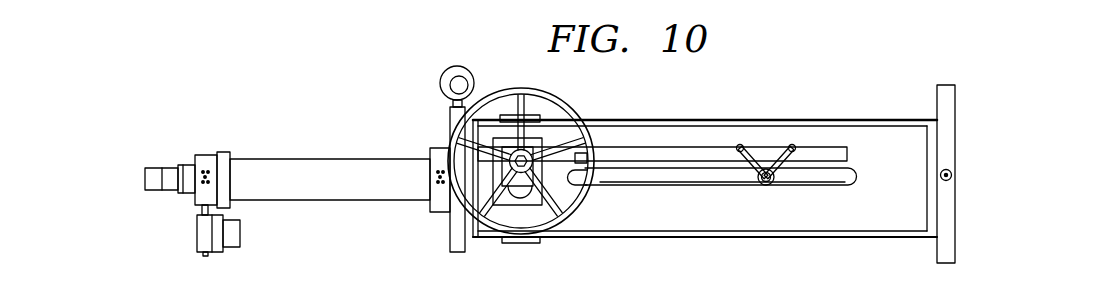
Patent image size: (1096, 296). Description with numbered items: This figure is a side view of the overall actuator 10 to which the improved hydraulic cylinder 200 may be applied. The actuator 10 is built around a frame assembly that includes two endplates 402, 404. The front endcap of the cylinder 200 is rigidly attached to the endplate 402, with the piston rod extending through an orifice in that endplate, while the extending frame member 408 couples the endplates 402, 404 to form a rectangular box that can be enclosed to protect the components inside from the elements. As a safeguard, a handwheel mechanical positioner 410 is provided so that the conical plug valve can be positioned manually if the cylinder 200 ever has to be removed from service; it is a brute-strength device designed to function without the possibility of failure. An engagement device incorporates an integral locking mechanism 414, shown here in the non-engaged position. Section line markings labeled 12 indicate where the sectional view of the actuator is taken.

The actuator 10 is at (833, 83).
The section line 12- 12 is at (712, 75).
The cylinder 200 is at (323, 158).
The endplate 402 is at (449, 236).
The endplate 404 is at (937, 249).
The extending frame member 408 is at (873, 119).
The handwheel mechanical positioner 410 is at (588, 200).
The integral locking mechanism 414 is at (794, 164).